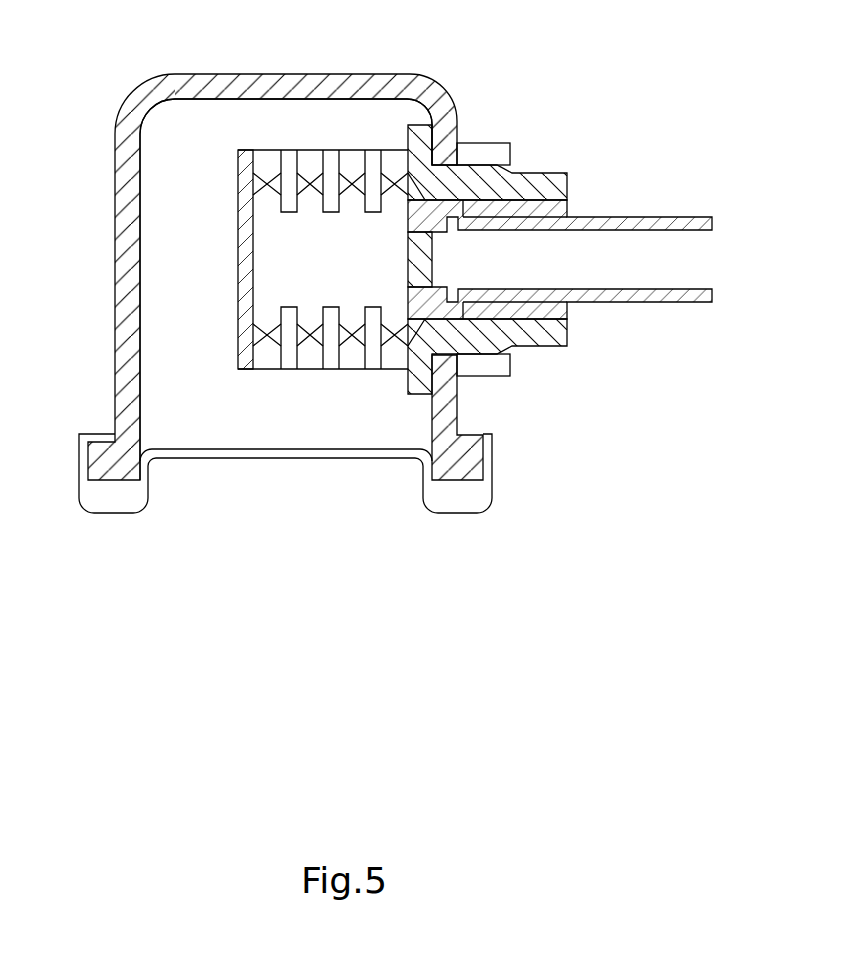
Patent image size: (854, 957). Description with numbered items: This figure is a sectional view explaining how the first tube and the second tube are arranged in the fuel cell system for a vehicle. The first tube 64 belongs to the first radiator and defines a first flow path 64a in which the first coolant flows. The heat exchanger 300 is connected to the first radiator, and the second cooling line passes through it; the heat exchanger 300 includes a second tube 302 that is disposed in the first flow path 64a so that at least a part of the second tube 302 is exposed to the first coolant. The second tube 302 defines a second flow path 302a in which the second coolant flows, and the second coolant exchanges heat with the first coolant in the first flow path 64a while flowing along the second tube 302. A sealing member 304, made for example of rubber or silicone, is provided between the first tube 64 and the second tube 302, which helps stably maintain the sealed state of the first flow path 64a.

The first tube 64 is at (135, 339).
The first flow path 64a is at (177, 182).
The heat exchanger 300 is at (368, 131).
The second tube 302 is at (220, 188).
The second flow path 302a is at (304, 250).
The sealing member 304 is at (465, 340).